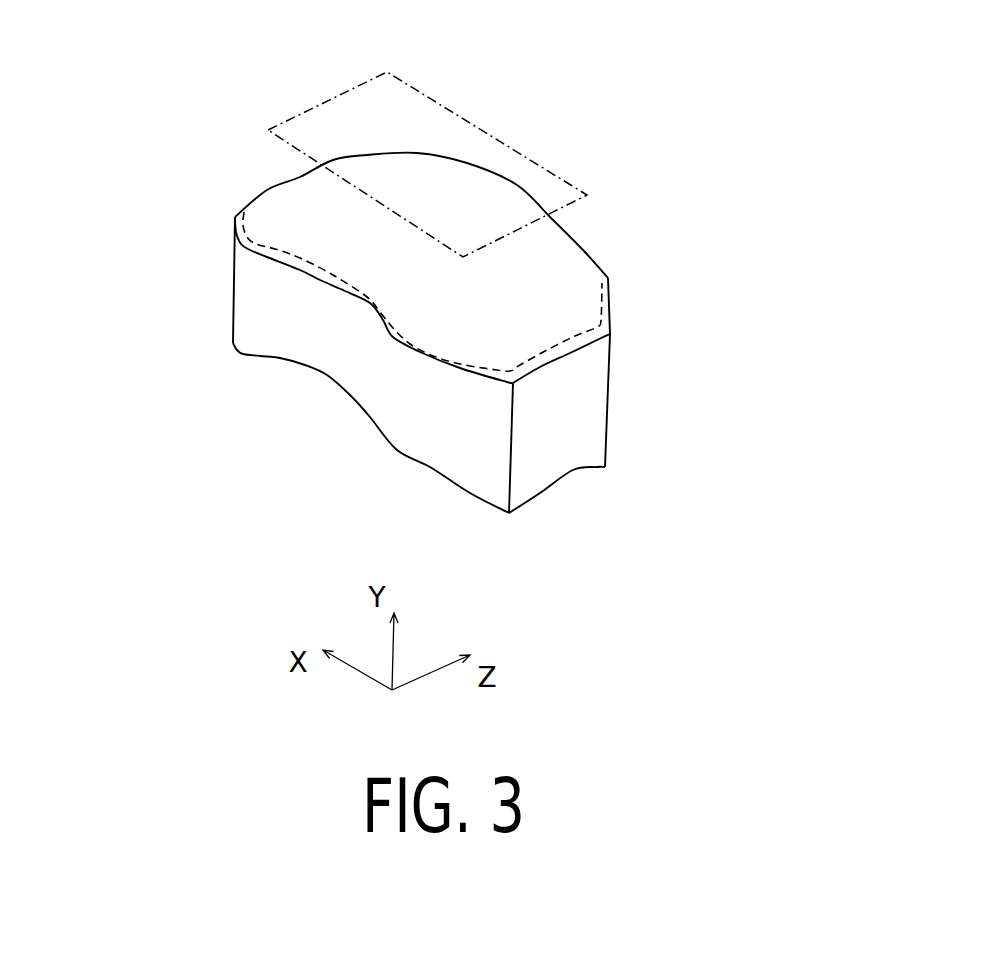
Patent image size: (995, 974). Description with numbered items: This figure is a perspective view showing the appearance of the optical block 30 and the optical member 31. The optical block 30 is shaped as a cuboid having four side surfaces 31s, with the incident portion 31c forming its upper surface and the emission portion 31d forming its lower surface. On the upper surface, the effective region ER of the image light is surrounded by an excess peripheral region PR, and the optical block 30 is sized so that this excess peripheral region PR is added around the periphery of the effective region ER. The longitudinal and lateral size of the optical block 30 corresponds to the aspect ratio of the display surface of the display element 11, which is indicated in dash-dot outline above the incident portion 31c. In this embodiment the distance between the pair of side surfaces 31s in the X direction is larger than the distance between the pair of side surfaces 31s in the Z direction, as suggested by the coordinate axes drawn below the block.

The display element 11 is at (447, 107).
The optical block 30 is at (449, 299).
The optical member 31 is at (418, 299).
The incident portion 31c is at (327, 193).
The side surfaces 31s is at (288, 218).
The emission portion 31d is at (380, 388).
The effective region ER is at (372, 302).
The excess peripheral region PR is at (608, 335).